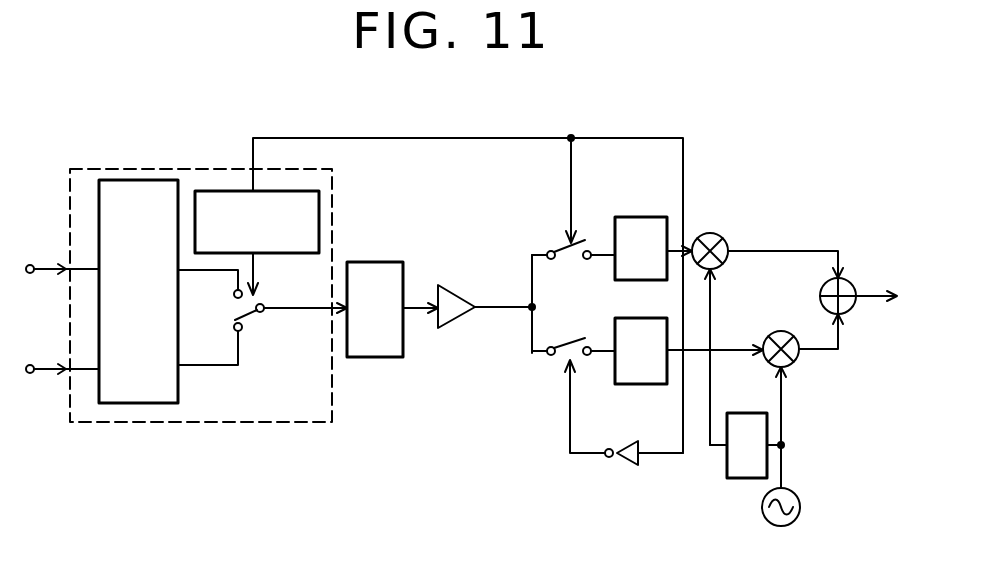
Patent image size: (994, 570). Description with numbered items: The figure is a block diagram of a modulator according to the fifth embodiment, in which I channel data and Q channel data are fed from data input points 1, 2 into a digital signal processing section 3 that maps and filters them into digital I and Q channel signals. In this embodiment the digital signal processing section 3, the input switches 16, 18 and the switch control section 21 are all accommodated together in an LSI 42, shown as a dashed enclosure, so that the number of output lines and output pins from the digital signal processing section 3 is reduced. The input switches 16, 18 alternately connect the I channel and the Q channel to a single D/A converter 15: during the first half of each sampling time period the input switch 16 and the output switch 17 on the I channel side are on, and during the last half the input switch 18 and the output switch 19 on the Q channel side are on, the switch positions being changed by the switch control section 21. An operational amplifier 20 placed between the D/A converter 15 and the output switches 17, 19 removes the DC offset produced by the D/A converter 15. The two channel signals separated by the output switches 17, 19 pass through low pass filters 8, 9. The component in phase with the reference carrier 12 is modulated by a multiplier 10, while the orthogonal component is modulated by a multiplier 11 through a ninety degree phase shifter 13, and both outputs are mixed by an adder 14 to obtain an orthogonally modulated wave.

The data input point 1 is at (30, 264).
The data input point 2 is at (30, 364).
The digital signal processing section 3 is at (134, 405).
The LSI 42 is at (153, 168).
The switch control section 21 is at (267, 190).
The input switch 16 is at (262, 333).
The input switch 18 is at (252, 317).
The D/A converter 15 is at (370, 262).
The operational amplifier 20 is at (453, 285).
The output switch 17 is at (578, 238).
The output switch 19 is at (560, 340).
The low pass filter 8 is at (633, 217).
The low pass filter 9 is at (642, 384).
The multiplier 10 is at (723, 233).
The multiplier 11 is at (774, 331).
The adder 14 is at (850, 282).
The reference carrier 12 is at (798, 490).
The 90° phase shifter 13 is at (742, 478).